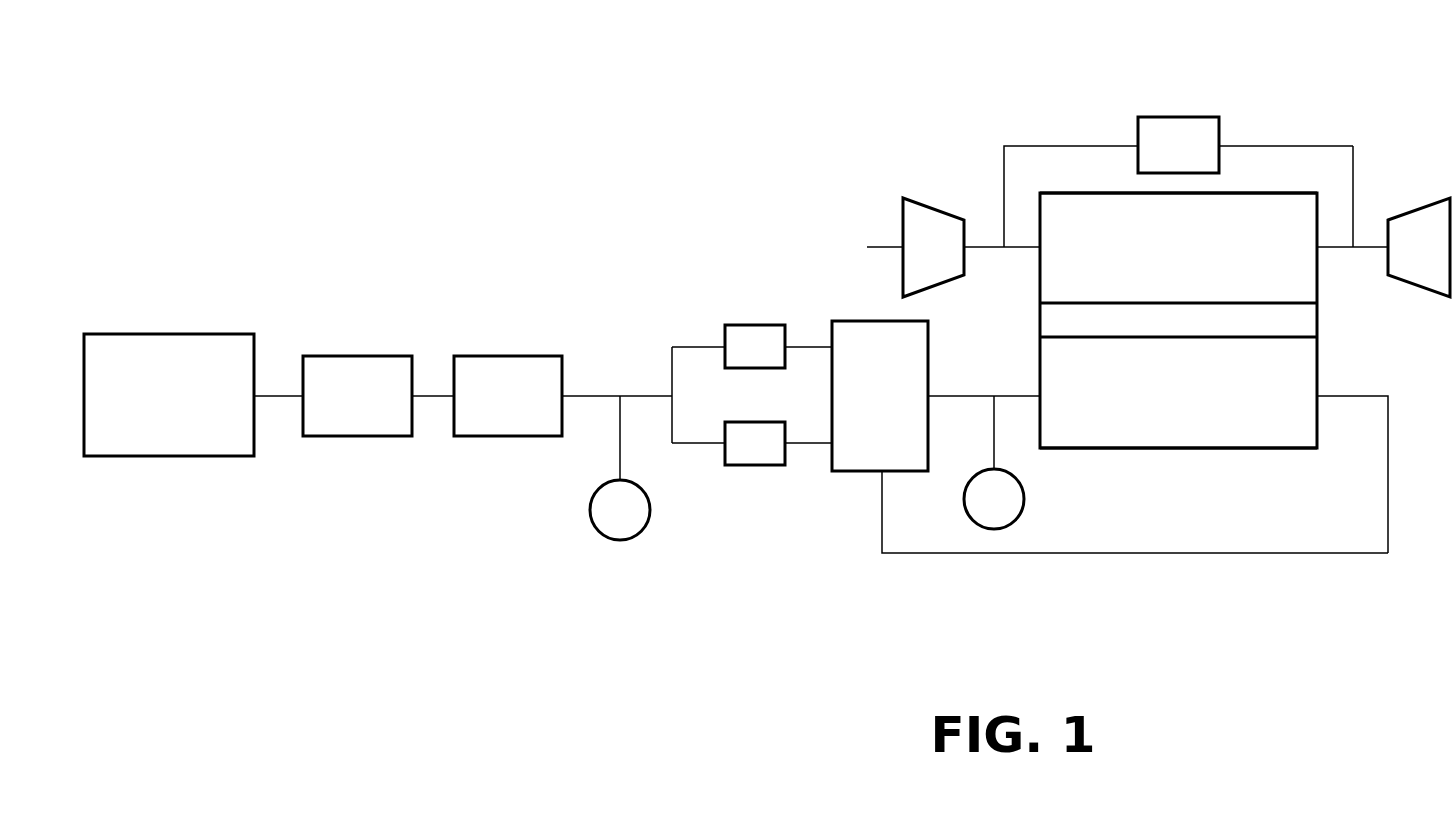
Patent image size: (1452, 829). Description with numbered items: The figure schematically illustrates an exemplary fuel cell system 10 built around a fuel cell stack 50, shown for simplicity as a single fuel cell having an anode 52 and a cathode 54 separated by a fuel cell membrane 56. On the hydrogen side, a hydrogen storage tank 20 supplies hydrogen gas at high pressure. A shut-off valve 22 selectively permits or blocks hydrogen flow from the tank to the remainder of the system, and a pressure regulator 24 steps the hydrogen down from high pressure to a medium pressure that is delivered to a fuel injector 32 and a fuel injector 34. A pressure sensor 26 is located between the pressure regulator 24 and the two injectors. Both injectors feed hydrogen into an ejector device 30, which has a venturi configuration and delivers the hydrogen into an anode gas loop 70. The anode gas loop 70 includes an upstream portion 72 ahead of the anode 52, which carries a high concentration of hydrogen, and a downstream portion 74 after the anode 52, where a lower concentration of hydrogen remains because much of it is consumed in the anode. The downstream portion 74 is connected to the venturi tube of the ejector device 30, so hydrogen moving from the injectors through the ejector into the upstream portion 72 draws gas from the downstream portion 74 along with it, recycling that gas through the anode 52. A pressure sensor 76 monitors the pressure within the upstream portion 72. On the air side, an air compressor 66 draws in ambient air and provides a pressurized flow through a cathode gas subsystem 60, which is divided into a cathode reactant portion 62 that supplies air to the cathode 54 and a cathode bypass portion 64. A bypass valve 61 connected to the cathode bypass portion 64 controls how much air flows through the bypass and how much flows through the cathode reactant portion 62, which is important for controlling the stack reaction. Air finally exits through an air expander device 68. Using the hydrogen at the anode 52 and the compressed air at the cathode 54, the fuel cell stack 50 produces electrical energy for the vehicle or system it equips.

The fuel cell system 10 is at (422, 122).
The hydrogen storage tank 20 is at (163, 333).
The shut-off valve 22 is at (353, 355).
The pressure regulator 24 is at (505, 355).
The pressure sensor 26 is at (650, 510).
The ejector device 30 is at (853, 321).
The fuel injector 32 is at (745, 325).
The fuel injector 34 is at (765, 465).
The fuel cell stack 50 is at (1191, 302).
The anode 52 is at (1300, 385).
The cathode 54 is at (1238, 193).
The fuel cell membrane 56 is at (1300, 322).
The cathode gas subsystem 60 is at (1318, 146).
The bypass valve 61 is at (1185, 117).
The cathode reactant portion 62 is at (1332, 248).
The cathode bypass portion 64 is at (1353, 178).
The air compressor 66 is at (1415, 292).
The air expander device 68 is at (935, 210).
The anode gas loop 70 is at (1235, 553).
The upstream portion 72 is at (978, 395).
The downstream portion 74 is at (1337, 553).
The pressure sensor 76 is at (1024, 500).